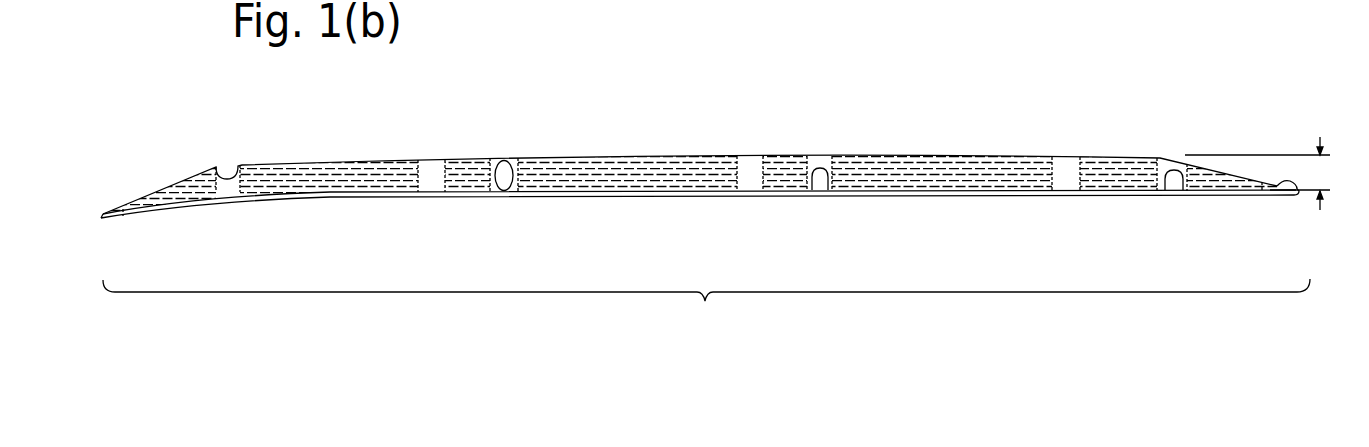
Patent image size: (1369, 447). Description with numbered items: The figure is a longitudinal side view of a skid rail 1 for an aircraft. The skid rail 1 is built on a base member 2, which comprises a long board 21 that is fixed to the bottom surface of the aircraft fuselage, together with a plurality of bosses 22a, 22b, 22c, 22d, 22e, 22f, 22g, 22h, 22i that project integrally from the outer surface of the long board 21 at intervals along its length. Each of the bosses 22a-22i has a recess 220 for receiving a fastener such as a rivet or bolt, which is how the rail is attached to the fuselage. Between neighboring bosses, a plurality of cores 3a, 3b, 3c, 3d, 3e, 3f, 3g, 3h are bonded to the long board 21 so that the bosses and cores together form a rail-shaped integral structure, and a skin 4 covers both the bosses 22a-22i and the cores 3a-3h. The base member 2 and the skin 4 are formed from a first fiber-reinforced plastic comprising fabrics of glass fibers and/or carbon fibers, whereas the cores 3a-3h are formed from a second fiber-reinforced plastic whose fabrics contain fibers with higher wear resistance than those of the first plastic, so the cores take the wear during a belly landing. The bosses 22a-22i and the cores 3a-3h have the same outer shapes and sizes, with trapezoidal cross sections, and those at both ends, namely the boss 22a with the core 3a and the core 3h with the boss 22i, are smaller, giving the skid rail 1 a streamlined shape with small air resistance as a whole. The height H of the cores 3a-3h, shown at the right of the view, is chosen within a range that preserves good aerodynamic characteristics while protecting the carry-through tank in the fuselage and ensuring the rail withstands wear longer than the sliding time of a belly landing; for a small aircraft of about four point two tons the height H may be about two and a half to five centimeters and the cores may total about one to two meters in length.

The skid rail 1 is at (820, 73).
The base member 2 is at (706, 304).
The core 3a is at (178, 182).
The core 3b is at (337, 160).
The core 3c is at (466, 162).
The core 3d is at (630, 160).
The core 3e is at (785, 163).
The core 3f is at (943, 163).
The core 3g is at (1118, 163).
The core 3h is at (1222, 175).
The skin 4 is at (693, 157).
The long board 21 is at (925, 200).
The boss 22a is at (115, 220).
The boss 22b is at (225, 194).
The boss 22c is at (430, 185).
The boss 22d is at (490, 191).
The boss 22e is at (750, 184).
The boss 22f is at (802, 188).
The boss 22g is at (1068, 178).
The boss 22h is at (1160, 188).
The boss 22i is at (1270, 190).
The recess 220 is at (230, 178).
The height H is at (1257, 173).